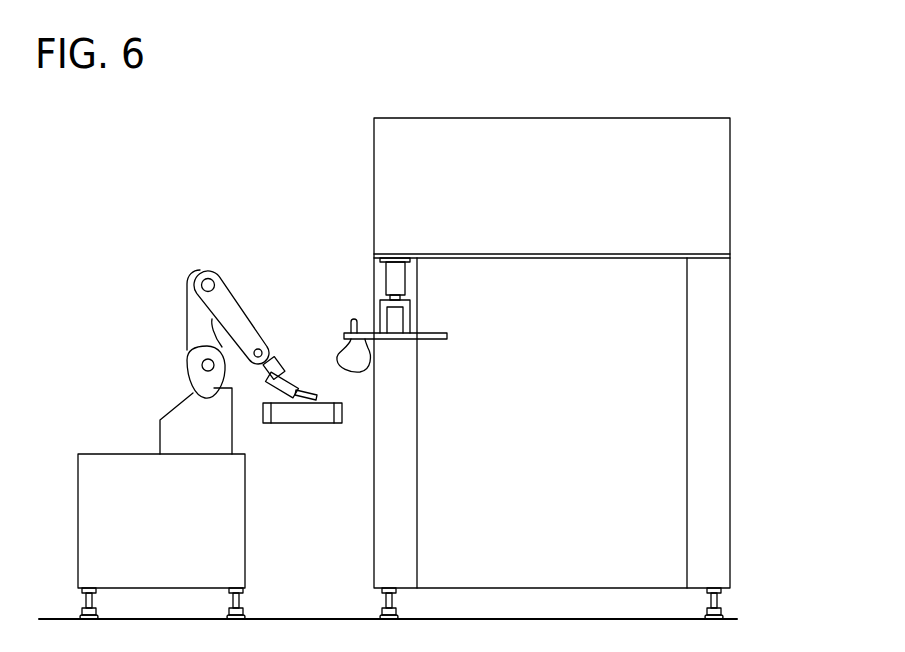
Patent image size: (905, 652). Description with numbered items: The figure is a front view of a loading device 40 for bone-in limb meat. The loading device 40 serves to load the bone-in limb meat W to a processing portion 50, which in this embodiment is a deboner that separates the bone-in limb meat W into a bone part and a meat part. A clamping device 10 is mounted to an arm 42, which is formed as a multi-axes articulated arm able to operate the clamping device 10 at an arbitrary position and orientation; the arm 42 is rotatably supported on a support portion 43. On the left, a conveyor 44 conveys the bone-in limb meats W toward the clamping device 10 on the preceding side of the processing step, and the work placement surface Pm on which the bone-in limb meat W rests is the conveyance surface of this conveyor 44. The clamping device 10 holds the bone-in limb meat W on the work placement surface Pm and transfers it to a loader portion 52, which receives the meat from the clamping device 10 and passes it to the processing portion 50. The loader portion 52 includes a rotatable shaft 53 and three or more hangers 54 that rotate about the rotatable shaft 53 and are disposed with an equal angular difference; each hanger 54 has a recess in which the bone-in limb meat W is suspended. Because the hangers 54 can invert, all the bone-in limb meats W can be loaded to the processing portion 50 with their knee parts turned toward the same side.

The loading device 40 is at (242, 171).
The arm 42 is at (243, 305).
The support portion 43 is at (182, 413).
The clamping device 10 is at (298, 372).
The bone-in limb meat W is at (338, 356).
The work placement surface Pm is at (322, 402).
The conveyor 44 is at (325, 425).
The processing portion 50 is at (373, 172).
The loader portion 52 is at (438, 322).
The rotatable shaft 53 is at (402, 280).
The hanger 54 is at (367, 330).